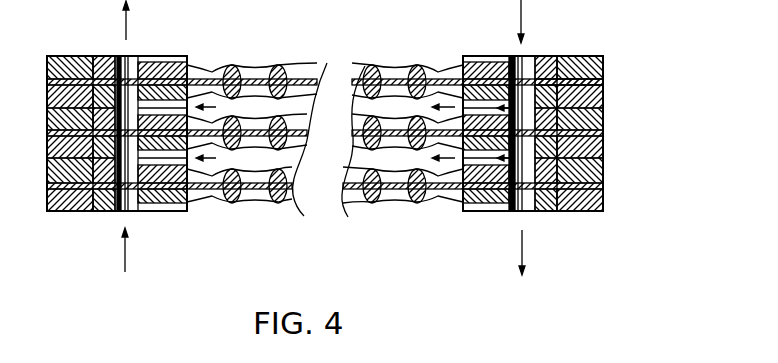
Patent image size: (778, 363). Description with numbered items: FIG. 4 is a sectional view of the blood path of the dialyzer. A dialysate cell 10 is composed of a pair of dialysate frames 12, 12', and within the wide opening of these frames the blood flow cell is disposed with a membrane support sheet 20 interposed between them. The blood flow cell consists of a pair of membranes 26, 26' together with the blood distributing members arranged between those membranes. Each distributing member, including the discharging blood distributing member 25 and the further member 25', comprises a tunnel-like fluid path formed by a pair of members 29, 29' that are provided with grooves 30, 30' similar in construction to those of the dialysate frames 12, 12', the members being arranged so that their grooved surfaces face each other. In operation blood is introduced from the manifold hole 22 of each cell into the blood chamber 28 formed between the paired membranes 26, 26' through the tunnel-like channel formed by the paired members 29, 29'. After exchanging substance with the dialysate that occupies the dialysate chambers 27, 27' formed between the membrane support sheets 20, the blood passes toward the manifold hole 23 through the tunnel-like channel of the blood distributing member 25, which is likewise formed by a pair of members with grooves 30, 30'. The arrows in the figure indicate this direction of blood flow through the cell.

The dialysate cell 10 is at (619, 130).
The dialysate frame 12 is at (594, 65).
The membrane support sheet 20 is at (597, 88).
The dialysate frame 12' is at (597, 101).
The grooved member 29 is at (597, 144).
The grooved member 29' is at (600, 169).
The manifold hole 23 is at (122, 212).
The blood distributing member 25 is at (162, 163).
The inner lamina 25' is at (174, 195).
The dialysate chamber 27 is at (247, 185).
The dialysate chamber 27' is at (256, 196).
The blood chamber 28 is at (365, 158).
The membrane 26 is at (378, 216).
The membrane 26' is at (416, 221).
The groove 30 is at (472, 153).
The groove 30' is at (486, 214).
The manifold hole 22 is at (527, 212).